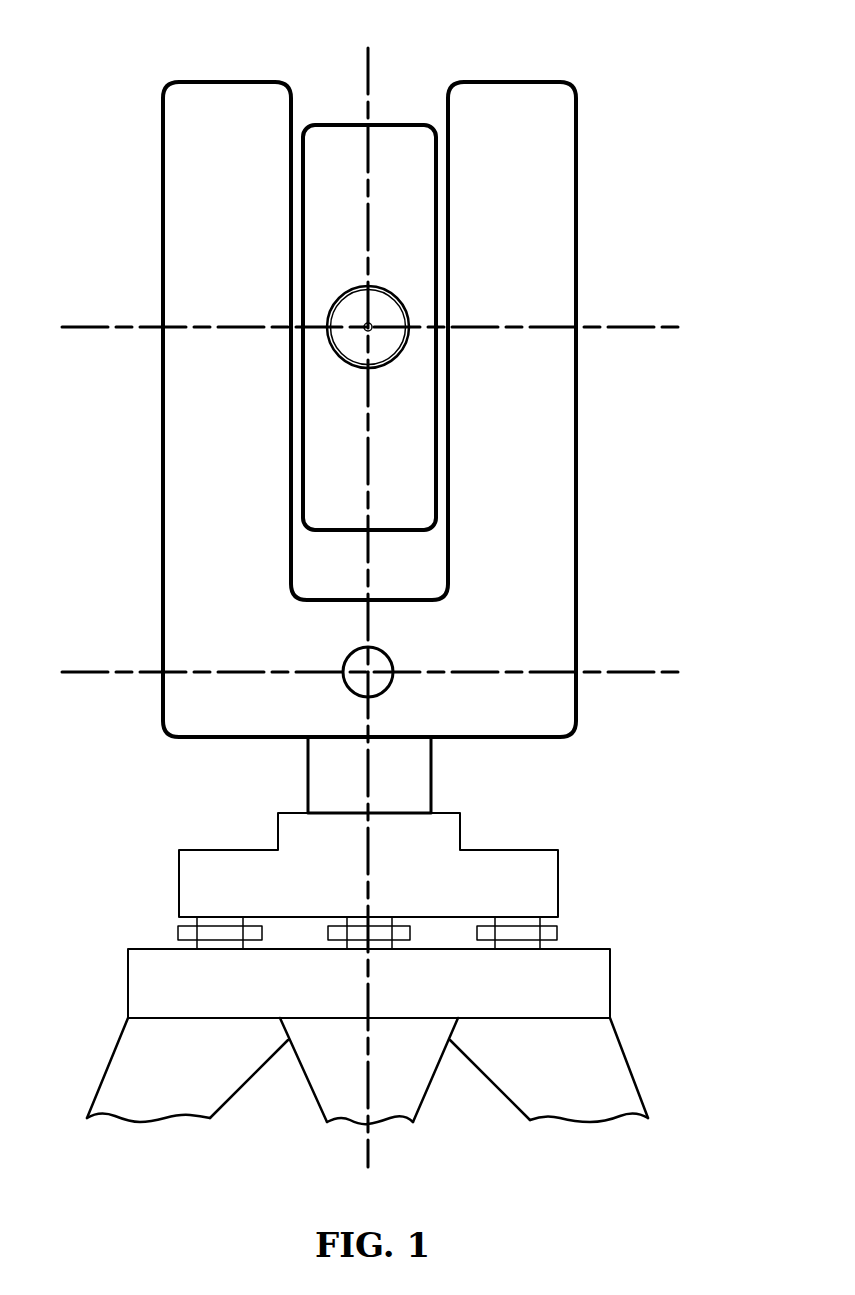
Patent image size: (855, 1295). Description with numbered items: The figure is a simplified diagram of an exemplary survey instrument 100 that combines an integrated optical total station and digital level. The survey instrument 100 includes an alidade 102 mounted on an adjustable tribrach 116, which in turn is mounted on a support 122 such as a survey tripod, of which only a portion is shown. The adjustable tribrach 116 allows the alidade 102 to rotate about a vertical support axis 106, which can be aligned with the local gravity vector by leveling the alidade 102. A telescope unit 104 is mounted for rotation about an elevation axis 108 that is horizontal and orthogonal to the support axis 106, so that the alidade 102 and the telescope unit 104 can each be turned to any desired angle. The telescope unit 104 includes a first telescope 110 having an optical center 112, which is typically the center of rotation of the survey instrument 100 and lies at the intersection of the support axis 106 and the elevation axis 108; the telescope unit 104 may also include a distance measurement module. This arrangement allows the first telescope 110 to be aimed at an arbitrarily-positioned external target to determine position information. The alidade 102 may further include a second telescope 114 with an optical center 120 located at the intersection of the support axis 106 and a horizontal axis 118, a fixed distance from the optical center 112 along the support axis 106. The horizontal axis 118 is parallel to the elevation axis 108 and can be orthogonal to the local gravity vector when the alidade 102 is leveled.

The survey instrument 100 is at (124, 52).
The alidade 102 is at (578, 508).
The telescope unit 104 is at (353, 125).
The support axis 106 is at (370, 62).
The elevation axis 108 is at (615, 327).
The first telescope 110 is at (372, 290).
The optical center 112 is at (370, 330).
The second telescope 114 is at (347, 662).
The adjustable tribrach 116 is at (560, 862).
The horizontal axis 118 is at (617, 672).
The optical center 120 is at (371, 675).
The support 122 is at (610, 972).